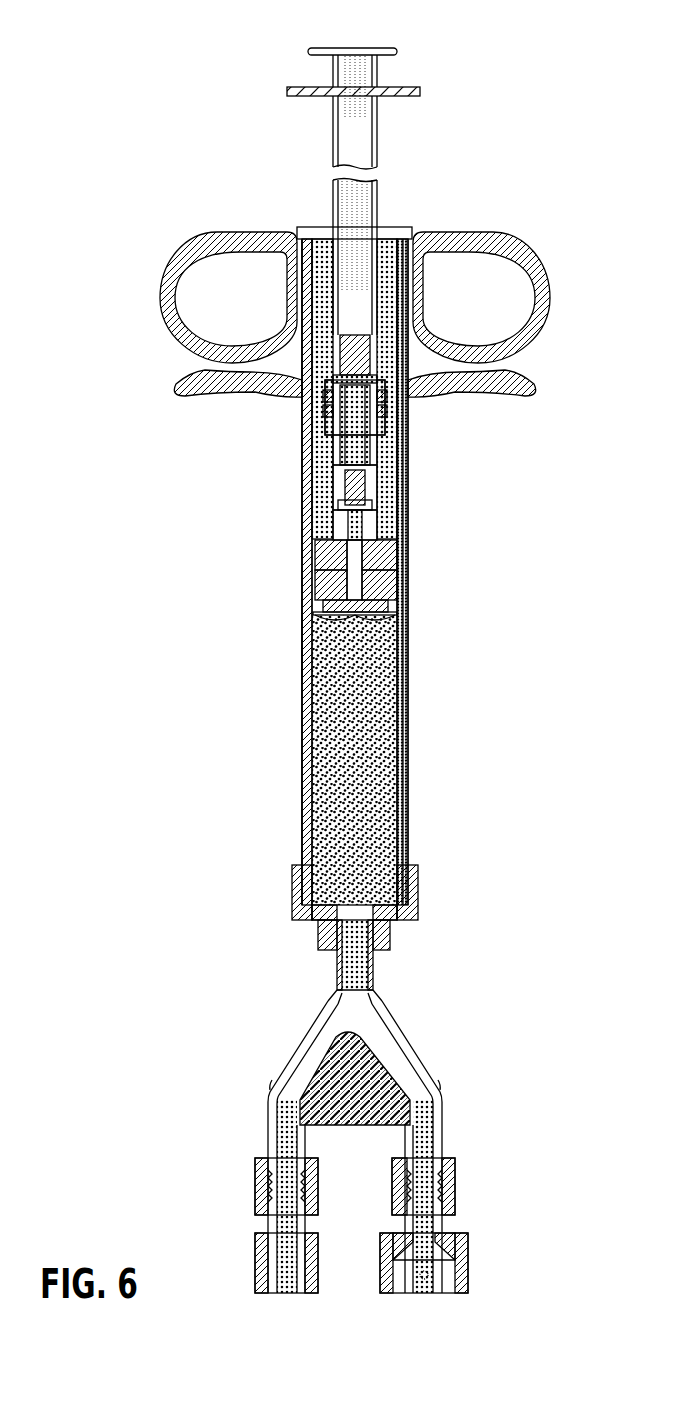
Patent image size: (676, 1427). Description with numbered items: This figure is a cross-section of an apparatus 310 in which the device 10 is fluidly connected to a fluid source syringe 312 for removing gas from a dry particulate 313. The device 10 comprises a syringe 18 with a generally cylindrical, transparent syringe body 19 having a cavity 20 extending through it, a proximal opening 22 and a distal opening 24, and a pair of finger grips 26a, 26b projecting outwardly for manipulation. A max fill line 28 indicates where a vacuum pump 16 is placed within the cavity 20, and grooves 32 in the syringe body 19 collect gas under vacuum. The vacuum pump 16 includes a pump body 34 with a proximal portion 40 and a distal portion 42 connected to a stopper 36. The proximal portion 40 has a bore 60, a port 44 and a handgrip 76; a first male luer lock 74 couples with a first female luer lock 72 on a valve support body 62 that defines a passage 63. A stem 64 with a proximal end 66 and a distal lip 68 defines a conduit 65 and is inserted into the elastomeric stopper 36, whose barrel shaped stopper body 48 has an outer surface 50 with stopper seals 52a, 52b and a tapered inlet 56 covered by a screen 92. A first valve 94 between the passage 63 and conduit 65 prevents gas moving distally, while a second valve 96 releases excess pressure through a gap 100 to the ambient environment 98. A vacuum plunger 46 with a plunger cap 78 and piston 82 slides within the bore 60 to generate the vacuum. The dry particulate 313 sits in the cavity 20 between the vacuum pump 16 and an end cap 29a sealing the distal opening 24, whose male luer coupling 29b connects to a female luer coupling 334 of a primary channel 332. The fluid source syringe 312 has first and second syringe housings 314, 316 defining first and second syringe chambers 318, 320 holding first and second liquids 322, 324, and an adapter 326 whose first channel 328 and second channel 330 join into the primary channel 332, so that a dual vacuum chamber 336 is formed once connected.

The apparatus 310 is at (112, 37).
The device 10 is at (214, 91).
The vacuum pump 16 is at (343, 175).
The vacuum plunger 46 is at (361, 36).
The port 44 is at (369, 72).
The plunger cap 78 is at (397, 51).
The handgrip 76 is at (420, 92).
The proximal portion 40 is at (332, 143).
The ambient environment 98 is at (402, 133).
The grooves 32 is at (403, 803).
The syringe body 19 is at (305, 722).
The cavity 20 is at (318, 227).
The proximal opening 22 is at (400, 227).
The syringe 18 is at (332, 296).
The finger grip 26a is at (215, 232).
The finger grip 26b is at (493, 232).
The piston 82 is at (345, 334).
The pump body 34 is at (323, 370).
The bore 60 is at (357, 383).
The first male luer lock 74 is at (323, 395).
The first female luer lock 72 is at (310, 415).
The valve support body 62 is at (380, 423).
The passage 63 is at (375, 452).
The distal portion 42 is at (327, 461).
The proximal end 66 is at (333, 487).
The second valve 96 is at (373, 490).
The gap 100 is at (387, 487).
The first valve 94 is at (357, 507).
The conduit 65 is at (353, 535).
The stopper 36 is at (320, 533).
The outer surface 50 is at (328, 577).
The stopper seal 52a is at (315, 558).
The stopper seal 52b is at (313, 598).
The stem 64 is at (398, 550).
The stopper body 48 is at (385, 575).
The inlet 56 is at (385, 608).
The max fill line 28 is at (308, 632).
The distal lip 68 is at (345, 614).
The screen 92 is at (385, 618).
The dry particulate 313 is at (365, 722).
The dual vacuum chamber 336 is at (355, 845).
The end cap 29a is at (291, 884).
The distal opening 24 is at (395, 917).
The male luer coupling 29b is at (318, 940).
The female luer coupling 334 is at (338, 968).
The fluid source syringe 312 is at (375, 1140).
The primary channel 332 is at (373, 998).
The adapter 326 is at (416, 1051).
The first channel 328 is at (290, 1090).
The second channel 330 is at (438, 1105).
The first liquid 322 is at (285, 1133).
The second liquid 324 is at (430, 1142).
The first syringe housing 314 is at (257, 1240).
The second syringe housing 316 is at (460, 1240).
The first syringe chamber 318 is at (272, 1268).
The second syringe chamber 320 is at (468, 1272).